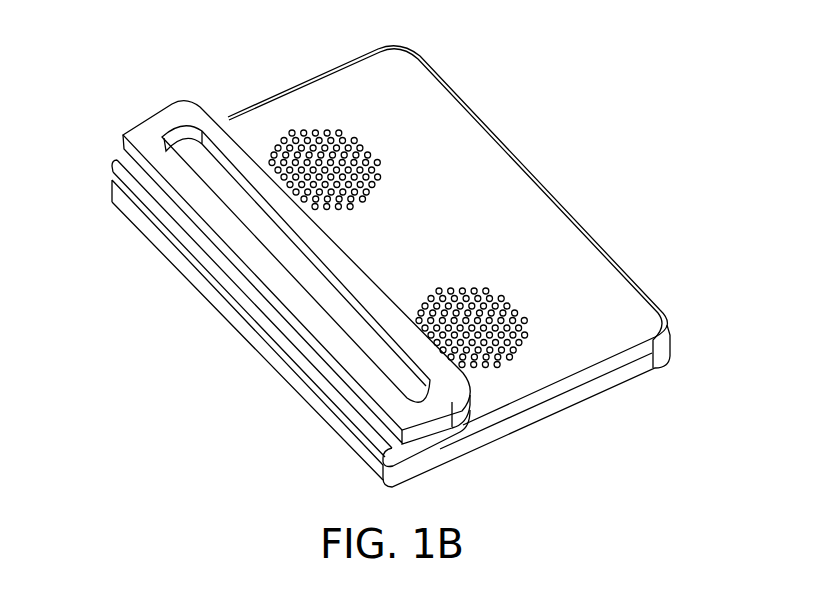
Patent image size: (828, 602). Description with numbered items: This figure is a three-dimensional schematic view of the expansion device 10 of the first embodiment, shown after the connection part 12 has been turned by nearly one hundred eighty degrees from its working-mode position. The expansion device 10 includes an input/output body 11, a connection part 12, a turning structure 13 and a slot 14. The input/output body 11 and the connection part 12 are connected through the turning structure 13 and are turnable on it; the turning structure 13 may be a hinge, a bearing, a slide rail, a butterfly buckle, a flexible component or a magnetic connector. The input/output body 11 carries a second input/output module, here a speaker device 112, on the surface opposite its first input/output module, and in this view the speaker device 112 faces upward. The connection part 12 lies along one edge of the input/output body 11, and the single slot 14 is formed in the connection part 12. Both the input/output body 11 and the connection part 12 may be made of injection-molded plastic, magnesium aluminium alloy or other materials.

The expansion device 10 is at (541, 72).
The input/output body 11 is at (613, 407).
The speaker device 112 is at (492, 293).
The connection part 12 is at (152, 130).
The turning structure 13 is at (168, 228).
The slot 14 is at (197, 160).